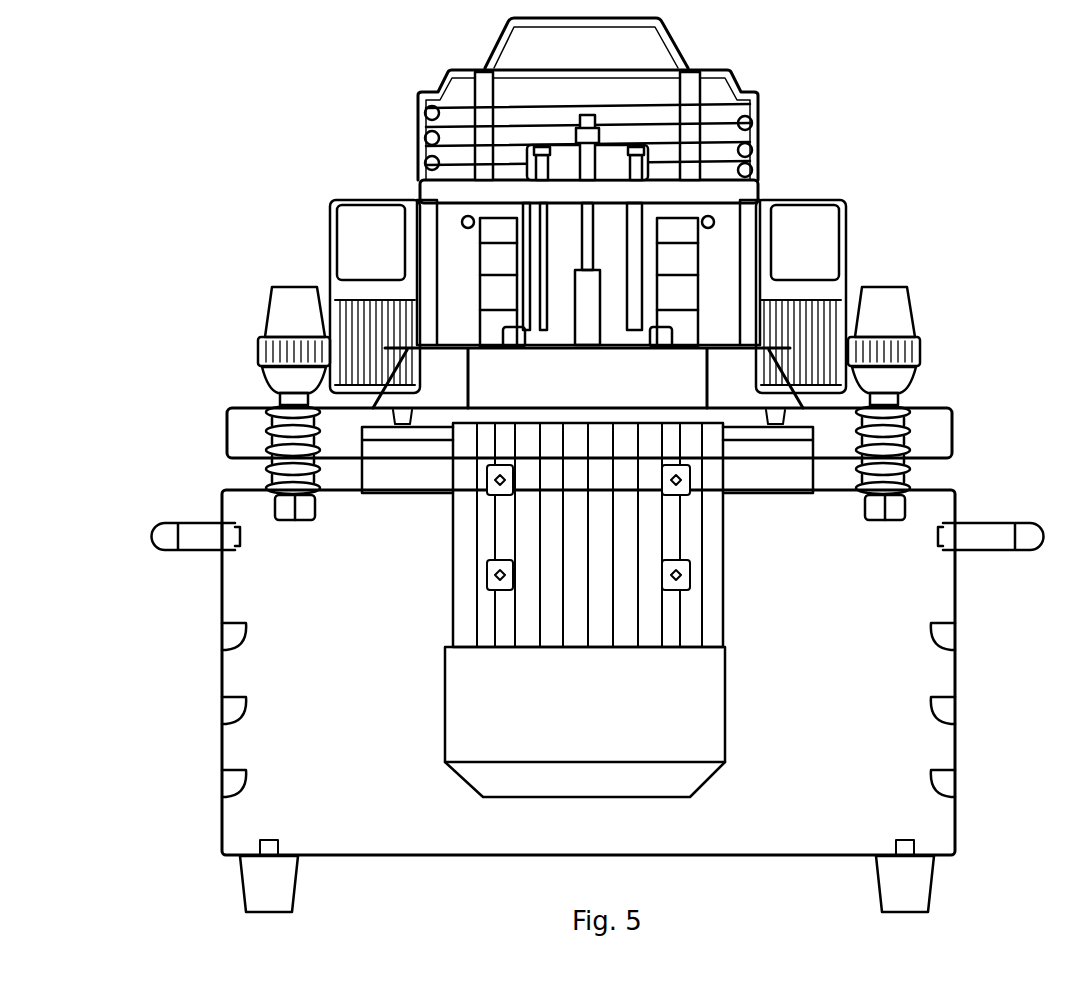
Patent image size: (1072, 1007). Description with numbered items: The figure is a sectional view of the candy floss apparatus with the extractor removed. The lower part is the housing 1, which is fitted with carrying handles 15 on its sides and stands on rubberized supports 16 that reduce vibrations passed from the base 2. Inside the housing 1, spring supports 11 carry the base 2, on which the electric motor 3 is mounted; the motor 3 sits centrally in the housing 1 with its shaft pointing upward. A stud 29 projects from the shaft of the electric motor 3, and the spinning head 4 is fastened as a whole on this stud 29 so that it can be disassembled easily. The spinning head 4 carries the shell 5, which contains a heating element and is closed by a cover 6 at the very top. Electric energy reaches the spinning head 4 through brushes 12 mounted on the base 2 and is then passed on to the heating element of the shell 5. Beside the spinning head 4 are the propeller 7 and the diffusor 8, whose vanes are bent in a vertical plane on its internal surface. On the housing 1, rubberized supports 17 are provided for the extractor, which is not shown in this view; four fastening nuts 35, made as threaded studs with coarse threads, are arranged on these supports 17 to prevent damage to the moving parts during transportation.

The housing 1 is at (937, 680).
The base 2 is at (925, 432).
The electric motor 3 is at (448, 708).
The spinning head 4 is at (757, 188).
The shell 5 is at (757, 118).
The cover 6 is at (663, 48).
The propeller 7 is at (760, 240).
The diffusor 8 is at (345, 228).
The spring supports 11 is at (267, 440).
The brushes 12 is at (450, 250).
The carrying handles 15 is at (145, 540).
The rubberized supports 16 is at (255, 890).
The rubberized supports for extractor 17 is at (282, 303).
The stud 29 is at (575, 135).
The fastening nuts 35 is at (270, 380).